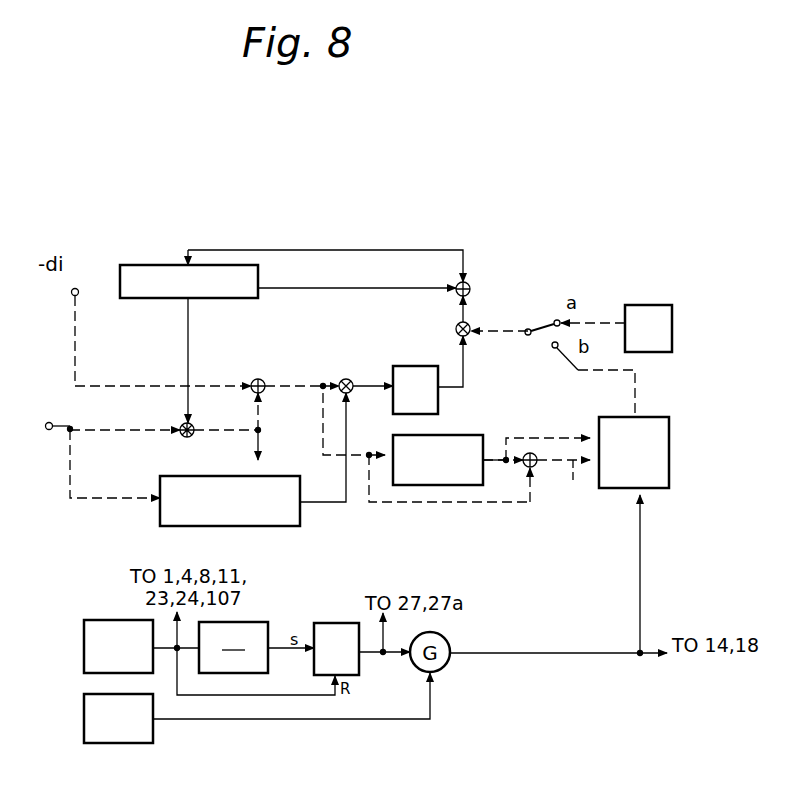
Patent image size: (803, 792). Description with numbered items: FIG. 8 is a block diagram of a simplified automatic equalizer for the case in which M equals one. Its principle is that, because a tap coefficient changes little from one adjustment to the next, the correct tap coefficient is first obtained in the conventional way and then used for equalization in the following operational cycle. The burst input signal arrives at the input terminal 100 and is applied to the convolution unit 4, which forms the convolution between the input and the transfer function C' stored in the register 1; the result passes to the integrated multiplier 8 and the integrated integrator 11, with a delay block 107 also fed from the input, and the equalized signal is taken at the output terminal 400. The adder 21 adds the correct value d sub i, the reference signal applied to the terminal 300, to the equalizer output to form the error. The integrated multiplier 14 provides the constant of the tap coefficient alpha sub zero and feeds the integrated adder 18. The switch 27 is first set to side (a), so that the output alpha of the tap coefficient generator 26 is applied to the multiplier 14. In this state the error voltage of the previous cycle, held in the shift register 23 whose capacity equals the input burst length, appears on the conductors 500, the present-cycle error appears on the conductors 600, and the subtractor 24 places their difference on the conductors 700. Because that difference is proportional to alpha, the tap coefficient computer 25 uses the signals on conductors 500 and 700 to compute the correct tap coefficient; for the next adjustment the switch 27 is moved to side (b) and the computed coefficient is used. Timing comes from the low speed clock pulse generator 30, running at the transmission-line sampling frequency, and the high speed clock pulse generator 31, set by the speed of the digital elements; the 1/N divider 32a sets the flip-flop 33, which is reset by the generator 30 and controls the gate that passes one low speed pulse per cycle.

The register 1 is at (167, 265).
The terminal 300 is at (46, 293).
The integrated adder 18 is at (469, 283).
The integrated multiplier 14 is at (469, 334).
The switch 27 is at (529, 328).
The tap coefficient generator 26 is at (645, 352).
The adder 21 is at (259, 379).
The integrated multiplier 8 is at (347, 379).
The integrated integrator 11 is at (416, 366).
The input terminal 100 is at (40, 440).
The convolution unit 4 is at (191, 437).
The output terminal 400 is at (281, 453).
The delay circuit 107 is at (232, 526).
The shift register 23 is at (447, 435).
The subtractor 24 is at (533, 453).
The conductors 500 is at (504, 481).
The conductors 700 is at (565, 484).
The conductors 600 is at (440, 503).
The tap coefficient computer 25 is at (616, 488).
The low speed clock pulse generator 30 is at (113, 620).
The high speed clock pulse generator 31 is at (113, 743).
The 1/N divider 32a is at (265, 622).
The flip-flop 33 is at (331, 623).